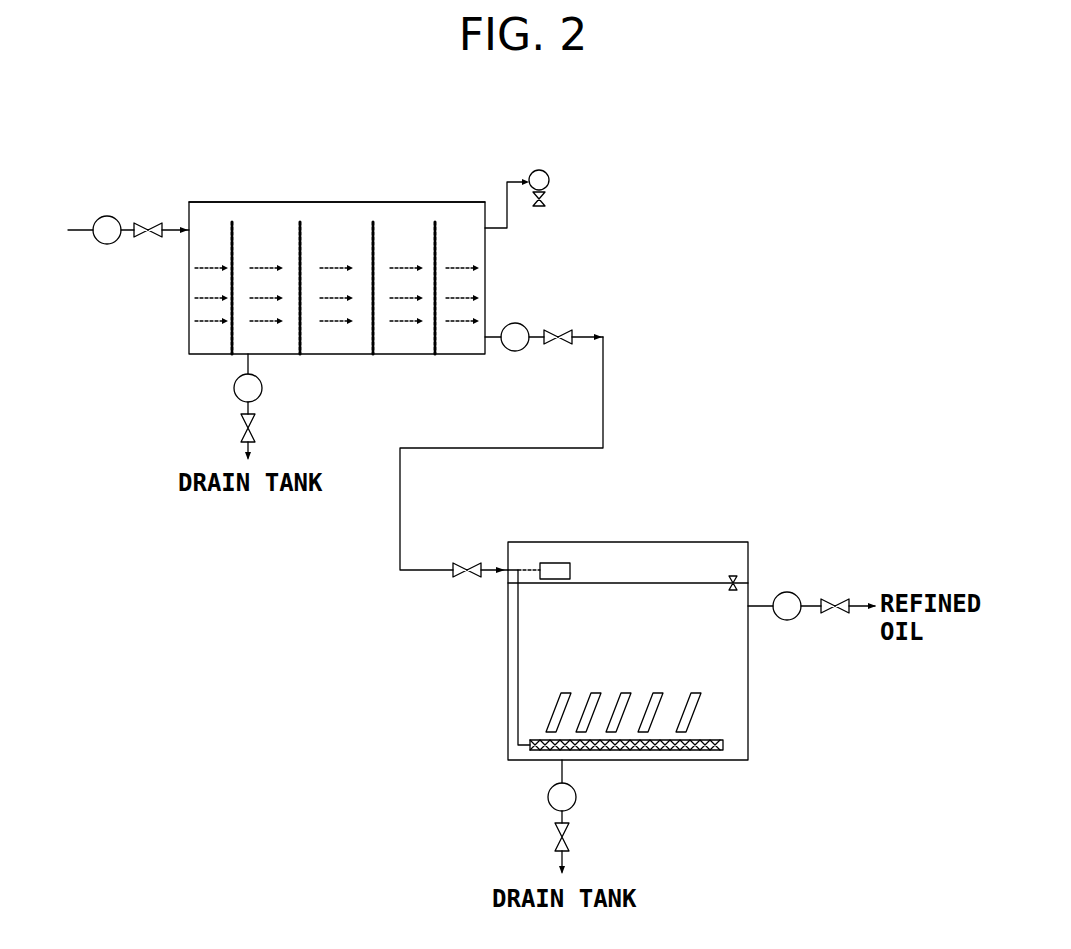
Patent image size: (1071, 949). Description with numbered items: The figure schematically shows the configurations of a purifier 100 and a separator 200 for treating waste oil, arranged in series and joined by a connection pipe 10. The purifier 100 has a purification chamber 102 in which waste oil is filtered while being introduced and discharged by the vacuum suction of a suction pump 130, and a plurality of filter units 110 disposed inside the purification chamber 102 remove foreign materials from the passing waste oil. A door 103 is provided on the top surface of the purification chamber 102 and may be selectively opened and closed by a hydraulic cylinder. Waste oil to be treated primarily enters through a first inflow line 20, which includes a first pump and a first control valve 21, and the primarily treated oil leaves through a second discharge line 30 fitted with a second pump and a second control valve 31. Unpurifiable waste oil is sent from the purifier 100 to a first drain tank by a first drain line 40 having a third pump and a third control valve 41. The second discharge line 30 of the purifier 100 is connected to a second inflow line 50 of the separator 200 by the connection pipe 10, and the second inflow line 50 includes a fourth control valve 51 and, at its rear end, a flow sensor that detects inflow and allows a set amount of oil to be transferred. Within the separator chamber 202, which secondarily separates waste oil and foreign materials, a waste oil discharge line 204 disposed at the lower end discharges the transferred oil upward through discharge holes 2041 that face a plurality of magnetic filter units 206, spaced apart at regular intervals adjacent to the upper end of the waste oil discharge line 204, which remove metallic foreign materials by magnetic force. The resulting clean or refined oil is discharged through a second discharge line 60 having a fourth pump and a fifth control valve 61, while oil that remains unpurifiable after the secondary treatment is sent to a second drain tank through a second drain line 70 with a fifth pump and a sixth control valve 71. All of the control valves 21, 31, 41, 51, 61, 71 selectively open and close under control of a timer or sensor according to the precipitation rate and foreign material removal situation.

The connection pipe 10 is at (603, 400).
The first inflow line 20 is at (92, 228).
The first control valve 21 is at (150, 240).
The second discharge line 30 is at (580, 330).
The second control valve 31 is at (560, 345).
The first drain line 40 is at (243, 362).
The third control valve 41 is at (240, 432).
The second inflow line 50 is at (487, 580).
The fourth control valve 51 is at (467, 560).
The second discharge line 60 is at (808, 603).
The fifth control valve 61 is at (836, 615).
The second drain line 70 is at (560, 770).
The sixth control valve 71 is at (555, 838).
The purifier 100 is at (298, 277).
The purification chamber 102 is at (189, 333).
The door 103 is at (307, 202).
The filter units 110 is at (300, 345).
The suction pump 130 is at (536, 208).
The separator 200 is at (586, 653).
The separator chamber 202 is at (508, 712).
The waste oil discharge line 204 is at (626, 787).
The discharge holes 2041 is at (645, 752).
The magnetic filter units 206 is at (698, 710).